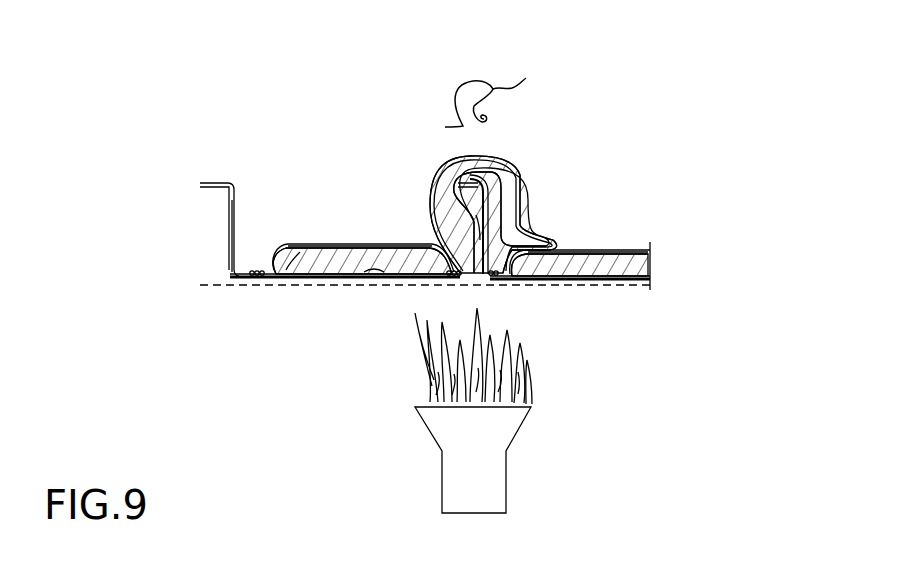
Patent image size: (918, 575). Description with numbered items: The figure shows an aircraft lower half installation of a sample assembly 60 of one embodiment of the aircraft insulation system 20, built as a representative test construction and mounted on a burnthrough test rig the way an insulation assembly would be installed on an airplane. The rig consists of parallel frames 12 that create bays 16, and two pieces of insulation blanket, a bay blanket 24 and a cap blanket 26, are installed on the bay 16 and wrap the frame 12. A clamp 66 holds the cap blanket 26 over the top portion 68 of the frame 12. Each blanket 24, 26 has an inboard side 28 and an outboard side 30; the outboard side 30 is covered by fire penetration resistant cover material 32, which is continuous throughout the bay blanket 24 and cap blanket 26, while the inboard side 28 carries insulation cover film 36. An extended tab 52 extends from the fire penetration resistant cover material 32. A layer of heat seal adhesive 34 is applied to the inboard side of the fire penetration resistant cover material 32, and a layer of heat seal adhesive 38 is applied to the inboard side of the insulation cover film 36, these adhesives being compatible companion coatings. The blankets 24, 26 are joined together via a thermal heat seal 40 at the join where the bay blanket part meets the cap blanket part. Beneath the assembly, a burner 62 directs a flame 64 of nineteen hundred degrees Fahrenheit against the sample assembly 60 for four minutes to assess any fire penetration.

The frame 12 is at (232, 243).
The bay 16 is at (238, 283).
The aircraft insulation system 20 is at (434, 193).
The bay blanket 24 is at (349, 260).
The cap blanket 26 is at (440, 168).
The inboard side 28 is at (312, 256).
The outboard side 30 is at (384, 274).
The fire penetration resistant cover material 32 is at (325, 278).
The heat seal adhesive 34 is at (276, 278).
The insulation cover film 36 is at (384, 246).
The heat seal adhesive 38 is at (450, 279).
The thermal heat seal 40 is at (240, 281).
The extended tab 52 is at (232, 206).
The sample assembly 60 is at (622, 88).
The burner 62 is at (468, 462).
The flame 64 is at (428, 388).
The clamp 66 is at (492, 89).
The top portion 68 is at (492, 168).